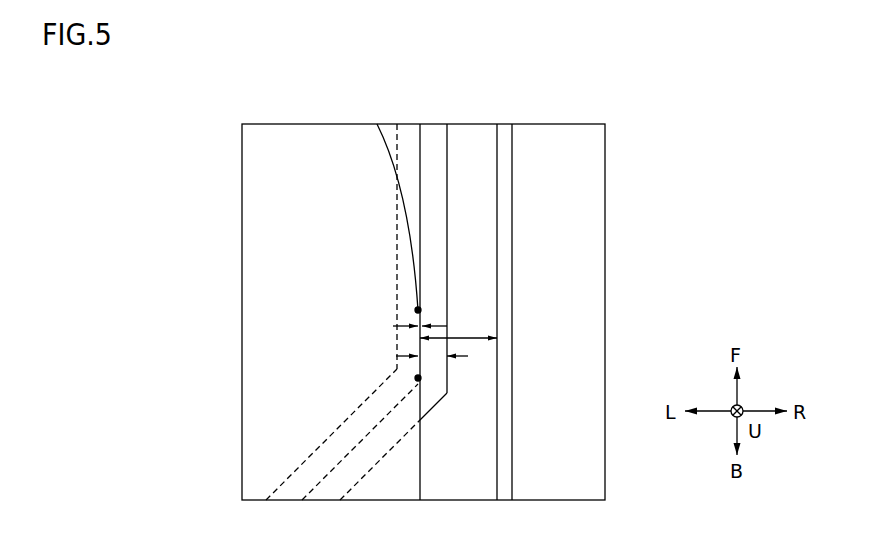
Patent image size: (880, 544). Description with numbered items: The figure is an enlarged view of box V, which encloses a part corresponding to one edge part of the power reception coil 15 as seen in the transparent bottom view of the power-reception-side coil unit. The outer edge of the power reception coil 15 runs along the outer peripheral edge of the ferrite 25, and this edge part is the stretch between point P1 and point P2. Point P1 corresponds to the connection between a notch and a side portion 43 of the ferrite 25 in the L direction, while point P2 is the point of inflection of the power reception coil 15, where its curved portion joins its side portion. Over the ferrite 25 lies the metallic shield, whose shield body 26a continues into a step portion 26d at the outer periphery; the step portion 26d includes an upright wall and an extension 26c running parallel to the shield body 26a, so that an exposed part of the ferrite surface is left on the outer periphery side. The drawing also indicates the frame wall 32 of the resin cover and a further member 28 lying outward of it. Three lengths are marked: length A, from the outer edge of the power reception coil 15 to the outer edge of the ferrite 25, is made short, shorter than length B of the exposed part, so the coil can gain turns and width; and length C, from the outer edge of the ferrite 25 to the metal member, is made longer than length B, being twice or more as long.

The box V is at (605, 152).
The power reception coil 15 is at (315, 145).
The shield body 26a is at (395, 138).
The ferrite 25 is at (421, 160).
The extension 26c is at (462, 251).
The step portion 26d is at (433, 406).
The member 28 is at (581, 137).
The frame wall 32 is at (507, 306).
The side portion 43 is at (421, 228).
The point P2 is at (414, 310).
The point P1 is at (414, 378).
The length A is at (416, 328).
The length B is at (432, 369).
The length C is at (458, 328).